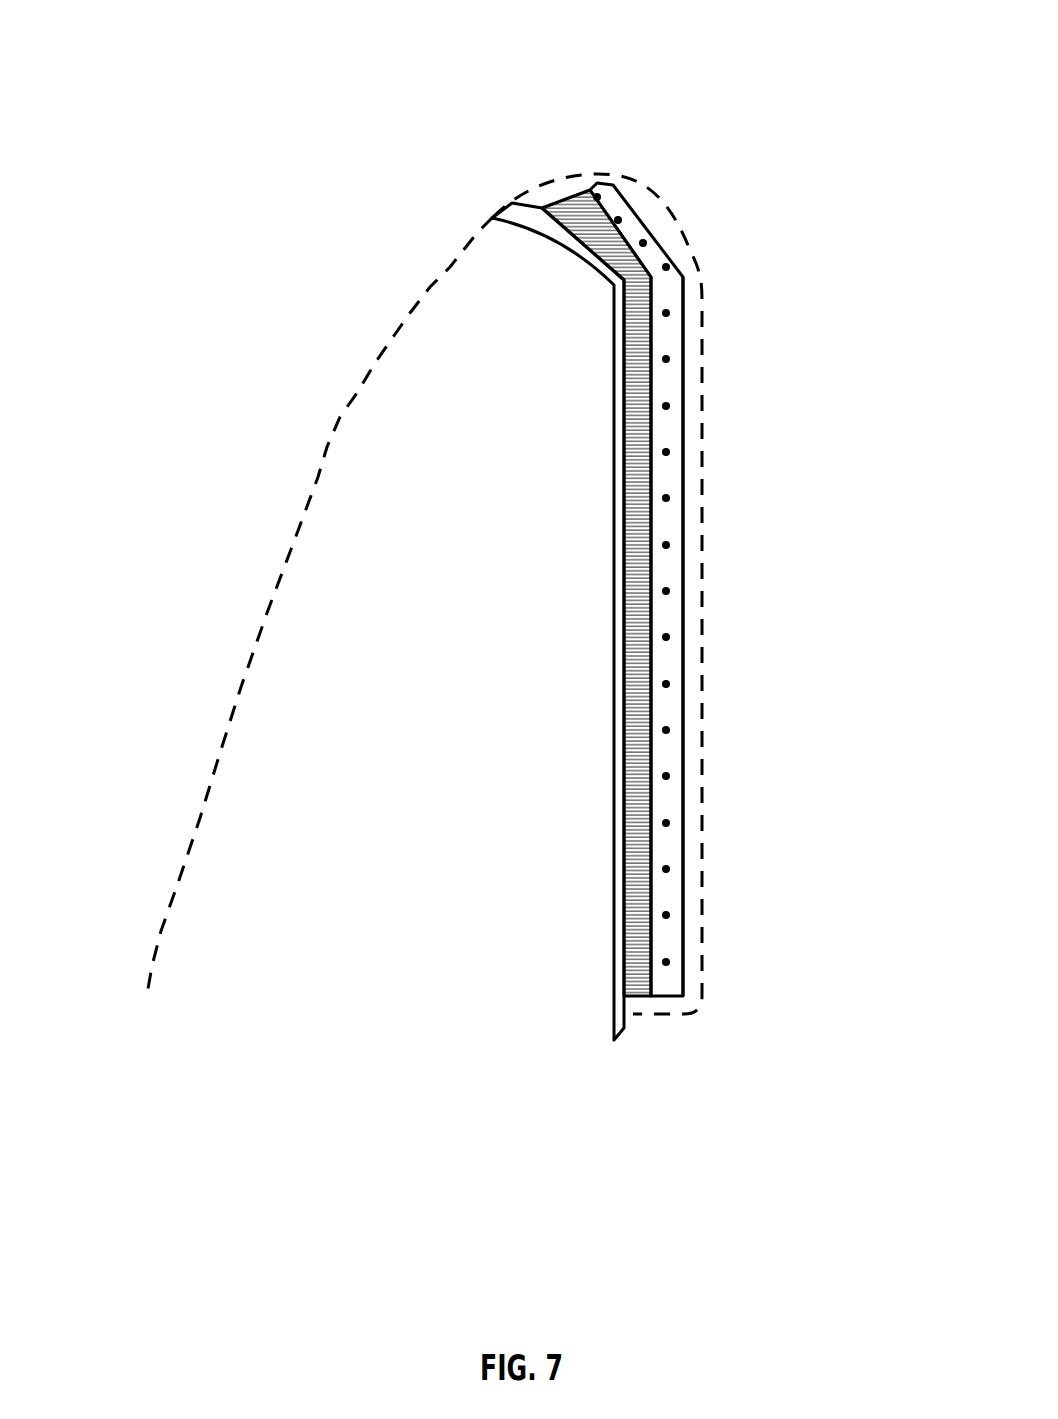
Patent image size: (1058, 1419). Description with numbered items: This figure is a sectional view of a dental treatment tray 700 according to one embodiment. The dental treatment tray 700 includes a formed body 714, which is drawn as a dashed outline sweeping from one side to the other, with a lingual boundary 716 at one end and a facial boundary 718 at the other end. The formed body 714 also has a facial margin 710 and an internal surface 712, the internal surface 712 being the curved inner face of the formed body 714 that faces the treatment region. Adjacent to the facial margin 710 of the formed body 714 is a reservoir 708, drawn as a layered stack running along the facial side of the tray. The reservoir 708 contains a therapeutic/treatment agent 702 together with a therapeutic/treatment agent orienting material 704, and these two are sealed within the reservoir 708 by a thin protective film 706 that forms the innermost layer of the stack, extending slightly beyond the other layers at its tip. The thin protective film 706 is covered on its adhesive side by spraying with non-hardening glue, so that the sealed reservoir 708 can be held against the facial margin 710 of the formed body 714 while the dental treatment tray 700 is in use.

The dental treatment tray 700 is at (860, 72).
The therapeutic/treatment agent 702 is at (663, 531).
The therapeutic/treatment agent orienting material 704 is at (640, 679).
The thin protective film 706 is at (526, 621).
The reservoir 708 is at (802, 636).
The facial margin 710 is at (651, 594).
The internal surface 712 is at (319, 608).
The formed body 714 is at (209, 306).
The lingual boundary 716 is at (107, 819).
The facial boundary 718 is at (631, 1141).